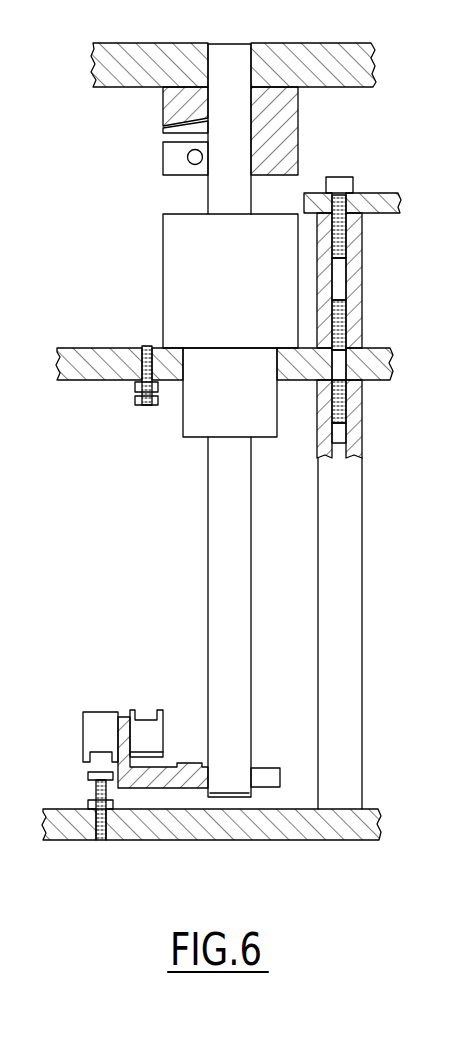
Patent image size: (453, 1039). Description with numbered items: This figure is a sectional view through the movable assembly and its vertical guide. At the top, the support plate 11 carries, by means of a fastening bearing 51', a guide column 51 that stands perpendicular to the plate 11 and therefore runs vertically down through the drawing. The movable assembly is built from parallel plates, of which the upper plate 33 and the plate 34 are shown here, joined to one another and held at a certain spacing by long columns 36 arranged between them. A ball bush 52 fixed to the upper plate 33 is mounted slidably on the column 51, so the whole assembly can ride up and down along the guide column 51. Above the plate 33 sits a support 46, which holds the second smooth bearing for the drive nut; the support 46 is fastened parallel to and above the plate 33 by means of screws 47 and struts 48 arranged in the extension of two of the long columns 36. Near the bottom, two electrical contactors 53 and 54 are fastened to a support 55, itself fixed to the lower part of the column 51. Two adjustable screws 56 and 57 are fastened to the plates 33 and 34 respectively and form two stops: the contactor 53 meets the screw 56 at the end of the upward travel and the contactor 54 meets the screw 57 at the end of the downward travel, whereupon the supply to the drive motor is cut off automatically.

The support plate 11 is at (327, 57).
The fastening bearing 51' is at (303, 131).
The guide column 51 is at (221, 420).
The ball bush 52 is at (197, 278).
The upper plate 33 is at (96, 353).
The adjustable screw 56 is at (152, 408).
The support 46 is at (357, 203).
The strut 48 is at (352, 283).
The screw 47 is at (345, 424).
The long column 36 is at (350, 568).
The plate 34 is at (297, 820).
The support 55 is at (167, 768).
The electrical contactor 54 is at (102, 722).
The electrical contactor 53 is at (152, 730).
The adjustable screw 57 is at (93, 803).